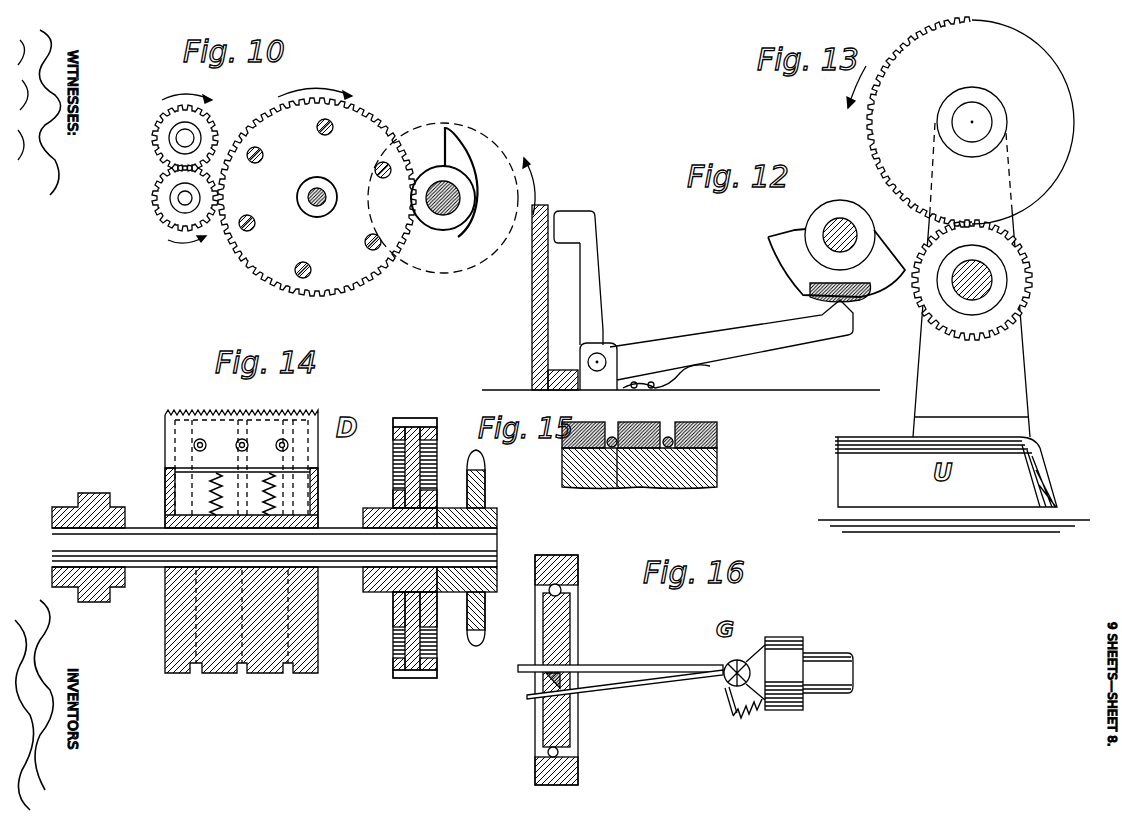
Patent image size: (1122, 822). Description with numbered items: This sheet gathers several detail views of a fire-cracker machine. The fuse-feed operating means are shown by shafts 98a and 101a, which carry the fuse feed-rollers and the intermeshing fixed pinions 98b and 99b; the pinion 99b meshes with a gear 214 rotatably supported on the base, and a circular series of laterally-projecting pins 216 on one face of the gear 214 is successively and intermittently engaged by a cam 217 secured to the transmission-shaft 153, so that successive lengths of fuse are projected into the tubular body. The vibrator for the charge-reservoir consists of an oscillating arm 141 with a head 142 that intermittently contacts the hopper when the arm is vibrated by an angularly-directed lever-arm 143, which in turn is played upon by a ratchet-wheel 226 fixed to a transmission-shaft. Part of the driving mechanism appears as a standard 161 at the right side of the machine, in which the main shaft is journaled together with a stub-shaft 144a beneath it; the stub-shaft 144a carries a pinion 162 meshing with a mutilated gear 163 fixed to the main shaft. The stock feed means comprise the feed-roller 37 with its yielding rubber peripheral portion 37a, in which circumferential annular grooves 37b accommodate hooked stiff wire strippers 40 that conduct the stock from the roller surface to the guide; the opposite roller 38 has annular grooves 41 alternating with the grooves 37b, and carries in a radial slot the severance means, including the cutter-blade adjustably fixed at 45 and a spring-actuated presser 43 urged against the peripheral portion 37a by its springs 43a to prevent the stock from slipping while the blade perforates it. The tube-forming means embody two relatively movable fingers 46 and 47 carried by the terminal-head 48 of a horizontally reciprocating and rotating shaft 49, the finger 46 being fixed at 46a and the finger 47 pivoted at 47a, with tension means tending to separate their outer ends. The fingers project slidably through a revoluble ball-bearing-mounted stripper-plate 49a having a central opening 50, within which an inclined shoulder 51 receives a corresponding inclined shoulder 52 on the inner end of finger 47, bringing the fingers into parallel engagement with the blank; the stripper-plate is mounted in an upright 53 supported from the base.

In FIG. 10, the shaft 98a is at (185, 138).
In FIG. 10, the pinion 98b is at (207, 137).
In FIG. 10, the pinion 99b is at (183, 198).
In FIG. 10, the shaft 101a is at (184, 206).
In FIG. 10, the gear 214 is at (364, 120).
In FIG. 10, the laterally-projecting pins 216 is at (247, 231).
In FIG. 10, the cam 217 is at (458, 148).
In FIG. 10, the transmission-shaft 153 is at (455, 210).
In FIG. 12, the oscillating arm 141 is at (604, 316).
In FIG. 12, the head 142 is at (578, 222).
In FIG. 12, the lever-arm 143 is at (711, 333).
In FIG. 12, the ratchet-wheel 226 is at (856, 300).
In FIG. 13, the standard 161 is at (1018, 389).
In FIG. 13, the pinion 162 is at (1017, 313).
In FIG. 13, the mutilated gear 163 is at (1030, 197).
In FIG. 13, the stub-shaft 144a is at (990, 280).
In FIG. 14, the feed-roller 37 is at (498, 531).
In FIG. 15, the feed-roller 37 is at (717, 483).
In FIG. 15, the yielding peripheral portion 37a is at (717, 432).
In FIG. 15, the circumferential annular channels or grooves 37b is at (680, 418).
In FIG. 14, the roller 38 is at (318, 636).
In FIG. 15, the strippers 40 is at (667, 448).
In FIG. 14, the circumferential annular channels or grooves 41 is at (196, 670).
In FIG. 14, the spring-actuated presser 43 is at (312, 483).
In FIG. 14, the springs 43a is at (333, 497).
In FIG. 14, the adjustable fixing 45 is at (282, 439).
In FIG. 16, the finger 46 is at (668, 665).
In FIG. 16, the inner end of fixed finger 46a is at (737, 660).
In FIG. 16, the finger 47 is at (662, 684).
In FIG. 16, the pivot of finger 47a is at (747, 719).
In FIG. 16, the terminal-head 48 is at (740, 745).
In FIG. 16, the shaft 49 is at (825, 660).
In FIG. 16, the stripper-plate 49a is at (562, 731).
In FIG. 16, the central opening 50 is at (570, 681).
In FIG. 16, the inclined shoulder 51 is at (527, 696).
In FIG. 16, the inclined shoulder 52 is at (715, 688).
In FIG. 16, the upright 53 is at (562, 588).